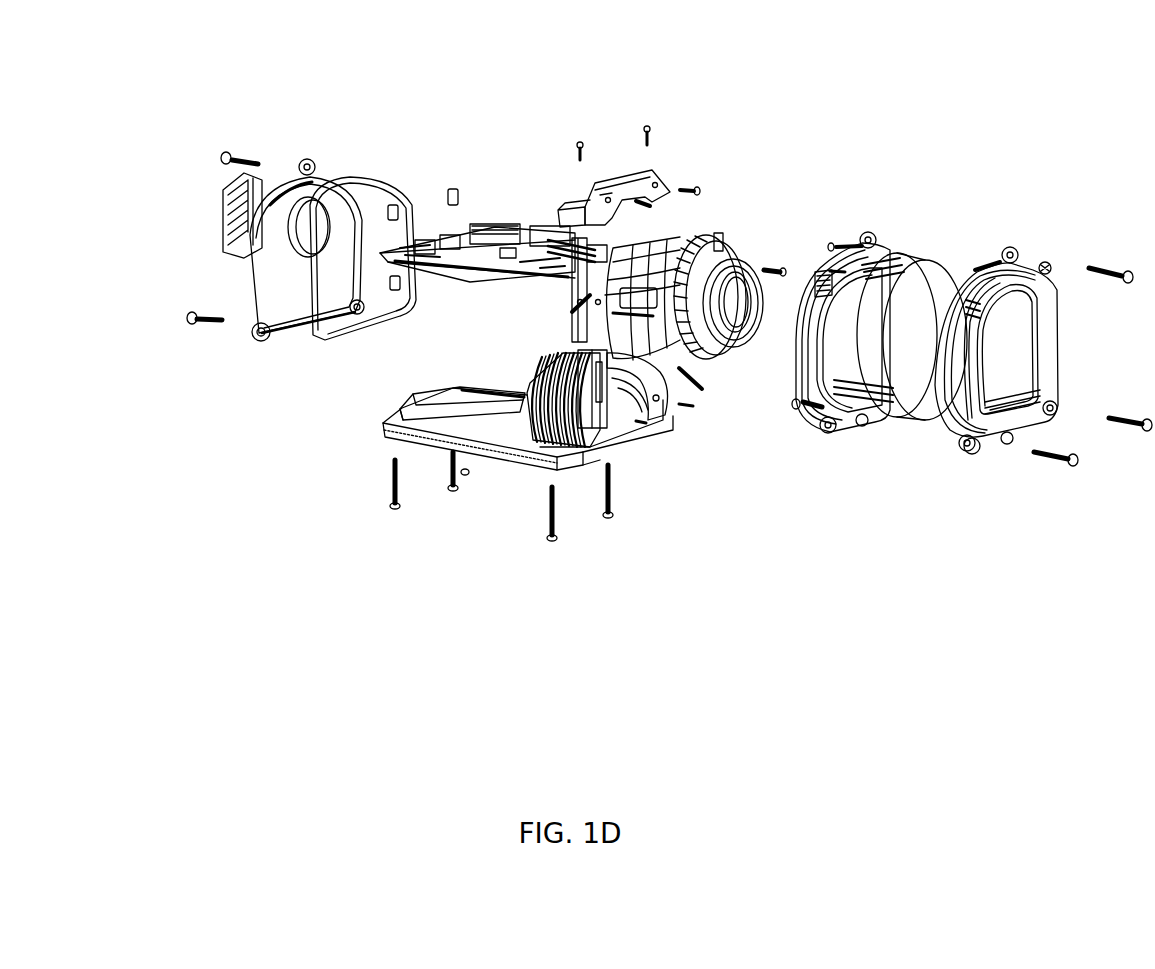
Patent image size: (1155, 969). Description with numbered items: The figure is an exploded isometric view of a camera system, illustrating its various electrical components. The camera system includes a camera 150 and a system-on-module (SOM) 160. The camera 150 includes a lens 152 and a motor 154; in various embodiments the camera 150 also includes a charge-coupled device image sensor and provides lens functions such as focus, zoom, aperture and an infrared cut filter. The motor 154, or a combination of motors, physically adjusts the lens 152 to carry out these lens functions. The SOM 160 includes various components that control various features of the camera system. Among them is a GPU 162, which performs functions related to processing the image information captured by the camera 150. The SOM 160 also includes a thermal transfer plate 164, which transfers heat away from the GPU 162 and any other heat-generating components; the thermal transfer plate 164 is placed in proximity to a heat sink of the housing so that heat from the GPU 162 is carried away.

The camera 150 is at (678, 432).
The lens 152 is at (732, 302).
The motor 154 is at (657, 242).
The system-on-module 160 is at (509, 143).
The GPU 162 is at (485, 414).
The thermal transfer plate 164 is at (393, 434).